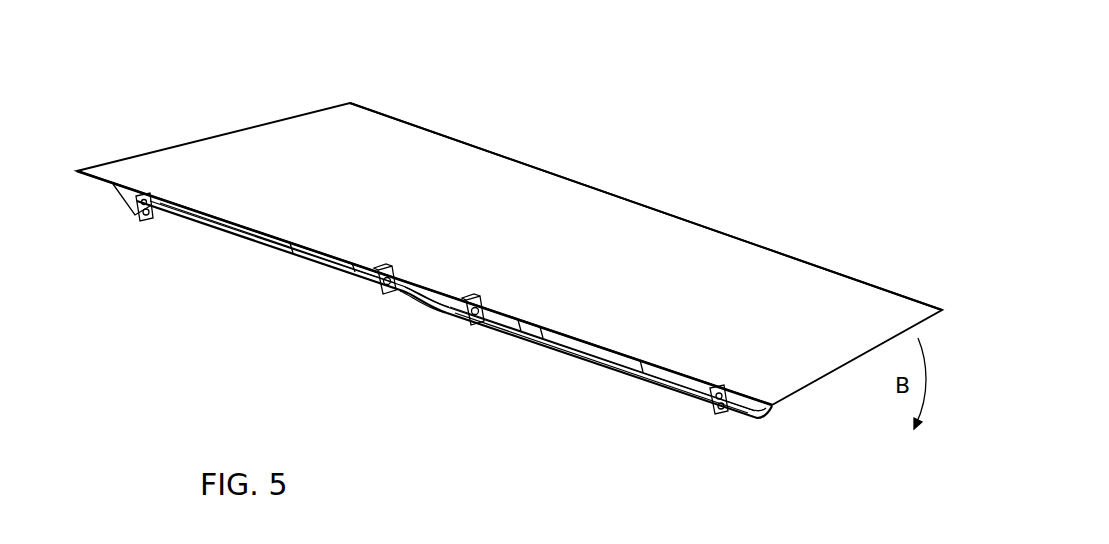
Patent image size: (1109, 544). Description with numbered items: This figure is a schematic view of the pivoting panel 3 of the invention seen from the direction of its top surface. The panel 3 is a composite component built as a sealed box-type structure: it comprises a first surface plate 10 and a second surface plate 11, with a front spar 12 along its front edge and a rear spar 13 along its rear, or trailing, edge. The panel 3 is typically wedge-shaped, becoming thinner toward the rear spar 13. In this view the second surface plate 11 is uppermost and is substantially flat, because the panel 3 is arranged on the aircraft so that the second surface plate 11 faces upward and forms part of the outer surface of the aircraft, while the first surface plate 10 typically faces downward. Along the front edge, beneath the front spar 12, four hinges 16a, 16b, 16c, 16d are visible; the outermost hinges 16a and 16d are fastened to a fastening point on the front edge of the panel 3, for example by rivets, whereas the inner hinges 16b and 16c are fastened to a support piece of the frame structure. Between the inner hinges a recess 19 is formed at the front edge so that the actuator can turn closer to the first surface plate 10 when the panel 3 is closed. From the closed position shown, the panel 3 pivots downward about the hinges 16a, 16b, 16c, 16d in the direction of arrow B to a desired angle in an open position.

The pivoting panel 3 is at (683, 117).
The first surface plate 10 is at (599, 363).
The second surface plate 11 is at (693, 258).
The front spar 12 is at (200, 230).
The rear spar 13 is at (419, 124).
The hinge 16a is at (142, 216).
The hinge 16b is at (375, 289).
The hinge 16c is at (473, 322).
The hinge 16d is at (722, 414).
The recess 19 is at (438, 305).